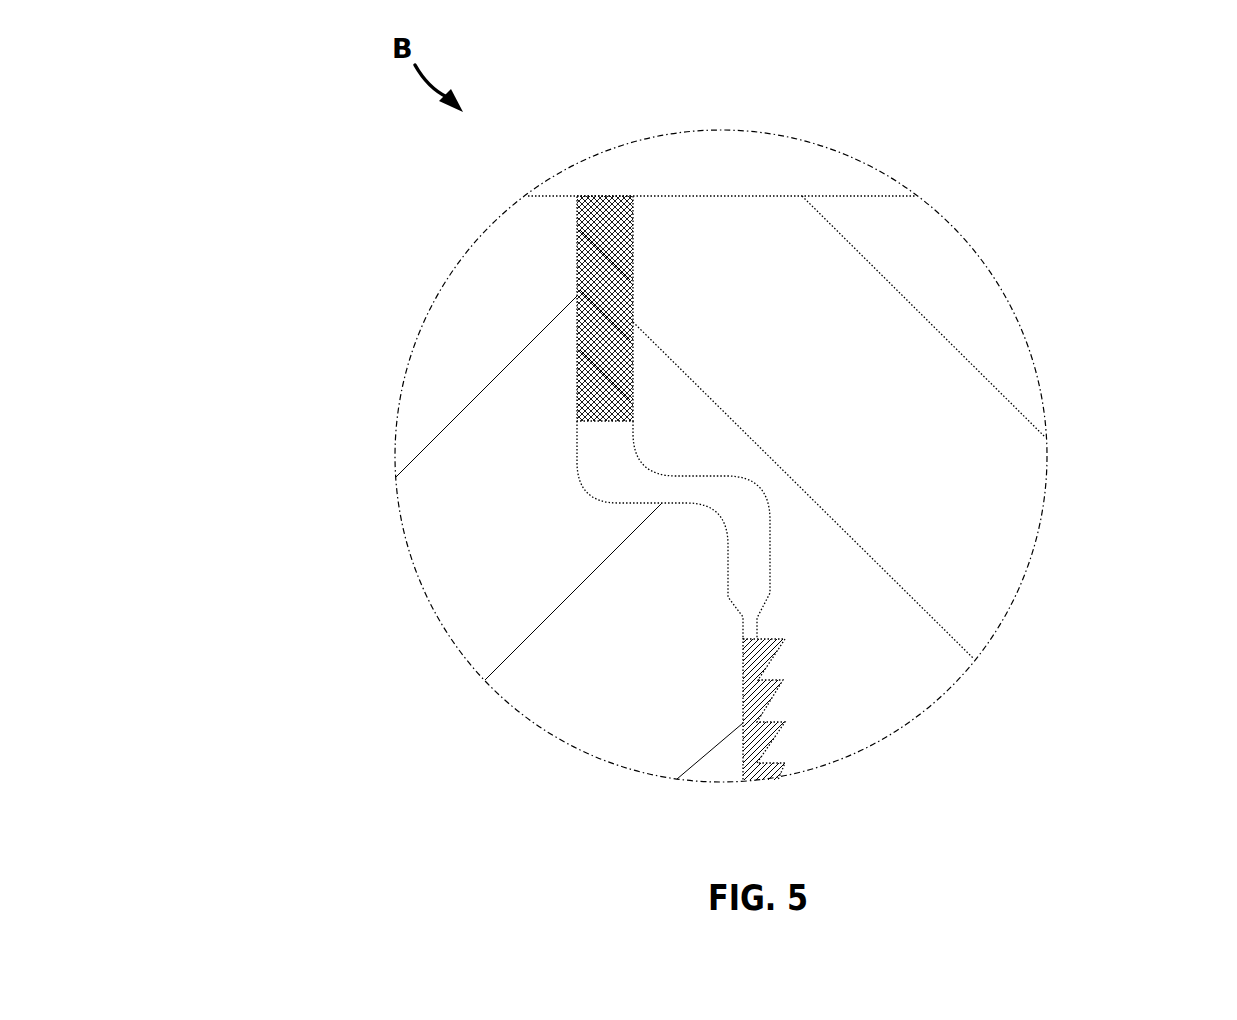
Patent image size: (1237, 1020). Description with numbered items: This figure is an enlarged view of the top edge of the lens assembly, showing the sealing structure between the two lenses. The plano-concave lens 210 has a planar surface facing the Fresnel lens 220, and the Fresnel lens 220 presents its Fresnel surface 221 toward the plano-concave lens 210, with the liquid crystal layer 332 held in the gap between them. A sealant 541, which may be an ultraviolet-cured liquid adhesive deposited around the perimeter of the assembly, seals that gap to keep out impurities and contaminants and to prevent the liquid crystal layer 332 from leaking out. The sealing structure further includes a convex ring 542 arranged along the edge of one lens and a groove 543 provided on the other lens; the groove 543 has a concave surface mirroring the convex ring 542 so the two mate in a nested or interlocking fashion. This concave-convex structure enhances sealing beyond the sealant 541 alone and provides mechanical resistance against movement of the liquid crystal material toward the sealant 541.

The plano-concave lens 210 is at (438, 376).
The Fresnel lens 220 is at (920, 342).
The Fresnel surface 221 is at (805, 665).
The liquid crystal layer 332 is at (977, 732).
The sealant 541 is at (592, 247).
The convex ring 542 is at (698, 270).
The groove 543 is at (592, 470).